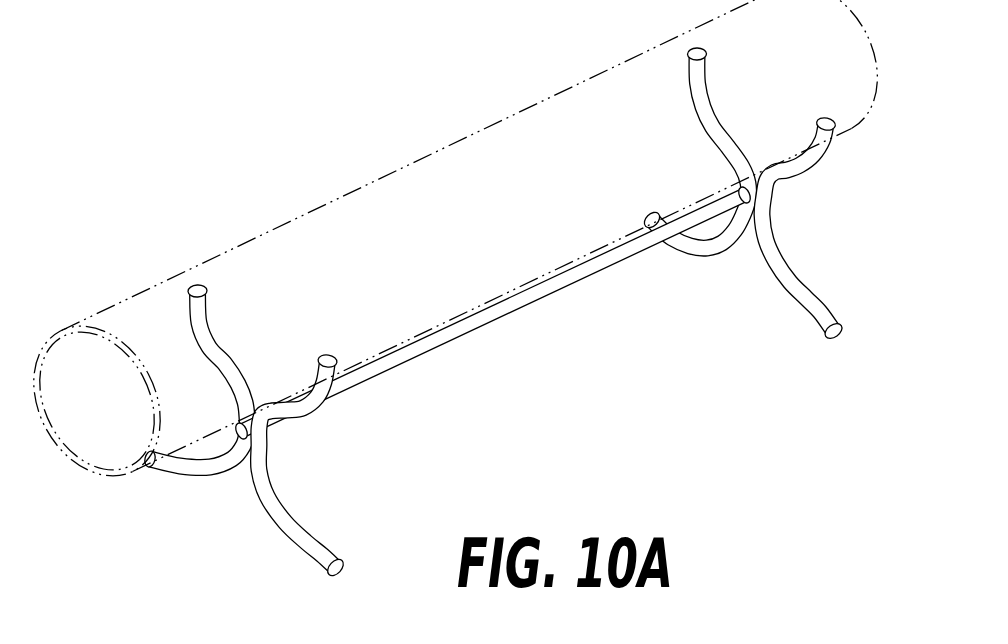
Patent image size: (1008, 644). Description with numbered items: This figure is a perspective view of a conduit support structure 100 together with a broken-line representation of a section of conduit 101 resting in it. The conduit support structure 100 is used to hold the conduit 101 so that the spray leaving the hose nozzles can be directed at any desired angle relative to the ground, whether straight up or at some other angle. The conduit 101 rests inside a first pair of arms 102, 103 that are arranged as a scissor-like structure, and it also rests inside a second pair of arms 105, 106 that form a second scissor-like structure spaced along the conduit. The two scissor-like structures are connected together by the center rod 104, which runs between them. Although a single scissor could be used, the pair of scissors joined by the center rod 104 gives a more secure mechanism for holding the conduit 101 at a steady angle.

The conduit support structure 100 is at (444, 301).
The conduit 101 is at (357, 188).
The arm 102 is at (188, 310).
The arm 103 is at (313, 407).
The center rod 104 is at (493, 318).
The arm 105 is at (700, 110).
The arm 106 is at (808, 170).